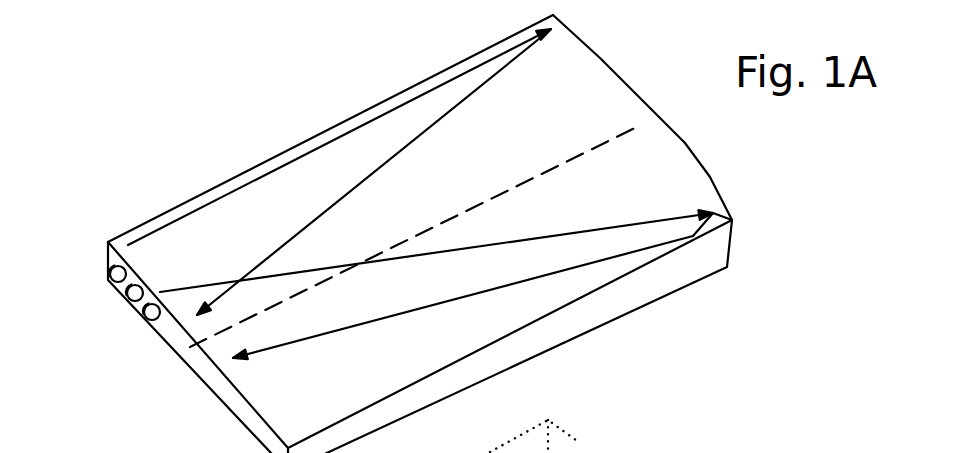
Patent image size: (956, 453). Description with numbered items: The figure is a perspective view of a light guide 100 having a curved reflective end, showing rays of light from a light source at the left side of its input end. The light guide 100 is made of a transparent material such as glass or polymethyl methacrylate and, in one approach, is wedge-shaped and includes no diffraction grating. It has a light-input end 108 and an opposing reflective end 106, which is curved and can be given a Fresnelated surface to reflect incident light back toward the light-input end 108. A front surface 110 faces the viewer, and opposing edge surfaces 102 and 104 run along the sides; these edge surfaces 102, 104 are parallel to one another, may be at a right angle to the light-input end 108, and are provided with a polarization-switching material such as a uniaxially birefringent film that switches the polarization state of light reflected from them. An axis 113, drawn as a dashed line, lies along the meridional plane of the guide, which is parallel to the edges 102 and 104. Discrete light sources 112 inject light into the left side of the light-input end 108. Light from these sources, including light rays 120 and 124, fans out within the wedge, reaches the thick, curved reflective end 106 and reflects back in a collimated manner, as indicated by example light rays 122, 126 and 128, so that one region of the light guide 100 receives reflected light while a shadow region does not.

The light guide 100 is at (93, 208).
The edge surface 102 is at (296, 147).
The edge surface 104 is at (512, 368).
The reflective end 106 is at (621, 75).
The light-input end 108 is at (221, 399).
The front surface 110 is at (664, 180).
The discrete light sources 112 is at (104, 312).
The axis 113 is at (527, 181).
The light ray 120 is at (424, 94).
The light ray 122 is at (497, 73).
The light ray 124 is at (505, 243).
The light ray 126 is at (703, 233).
The light ray 128 is at (376, 321).